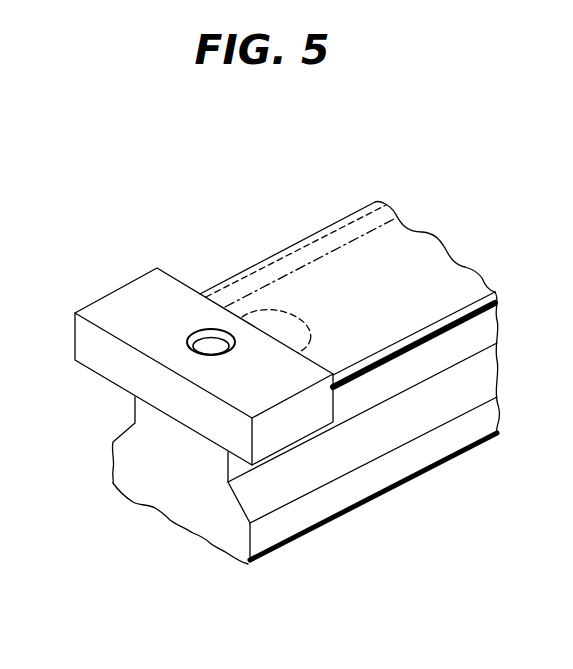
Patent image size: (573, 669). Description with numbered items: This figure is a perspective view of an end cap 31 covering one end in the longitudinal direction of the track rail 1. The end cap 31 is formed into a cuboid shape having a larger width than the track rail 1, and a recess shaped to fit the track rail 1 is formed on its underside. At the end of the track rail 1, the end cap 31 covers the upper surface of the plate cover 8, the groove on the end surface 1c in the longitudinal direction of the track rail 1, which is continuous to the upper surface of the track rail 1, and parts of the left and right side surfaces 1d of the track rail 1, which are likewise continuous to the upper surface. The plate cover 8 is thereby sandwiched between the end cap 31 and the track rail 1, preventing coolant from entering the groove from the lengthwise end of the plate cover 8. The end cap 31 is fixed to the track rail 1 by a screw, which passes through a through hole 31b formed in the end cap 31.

The track rail 1 is at (305, 406).
The end surface 1c is at (190, 505).
The side surfaces 1d is at (275, 483).
The plate cover 8 is at (300, 290).
The end cap 31 is at (195, 329).
The through hole 31b is at (212, 328).